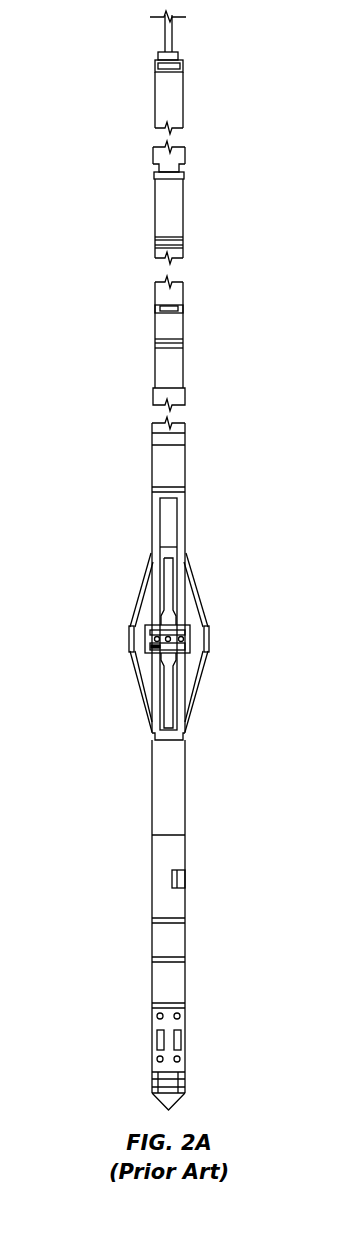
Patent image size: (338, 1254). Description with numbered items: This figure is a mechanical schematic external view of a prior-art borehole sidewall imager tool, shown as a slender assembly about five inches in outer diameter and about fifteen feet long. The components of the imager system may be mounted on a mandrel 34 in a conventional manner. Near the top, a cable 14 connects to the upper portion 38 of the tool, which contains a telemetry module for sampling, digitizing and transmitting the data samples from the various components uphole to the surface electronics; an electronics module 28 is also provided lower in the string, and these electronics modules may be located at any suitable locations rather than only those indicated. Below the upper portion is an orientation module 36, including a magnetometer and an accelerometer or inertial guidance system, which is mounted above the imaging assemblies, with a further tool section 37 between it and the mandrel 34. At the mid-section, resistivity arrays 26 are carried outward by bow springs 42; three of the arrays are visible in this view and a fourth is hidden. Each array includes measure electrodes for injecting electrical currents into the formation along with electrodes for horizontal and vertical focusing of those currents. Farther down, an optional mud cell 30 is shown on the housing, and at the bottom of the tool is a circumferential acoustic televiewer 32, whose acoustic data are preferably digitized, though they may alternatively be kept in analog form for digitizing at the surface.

The wireline cable 14 is at (173, 45).
The upper portion 38 is at (185, 88).
The orientation module 36 is at (185, 217).
The tool sub section 37 is at (185, 323).
The mandrel 34 is at (187, 470).
The bow springs 42 is at (140, 583).
The resistivity arrays 26 is at (128, 630).
The electronics module 28 is at (186, 788).
The mud cell 30 is at (186, 878).
The circumferential acoustic televiewer 32 is at (186, 1040).